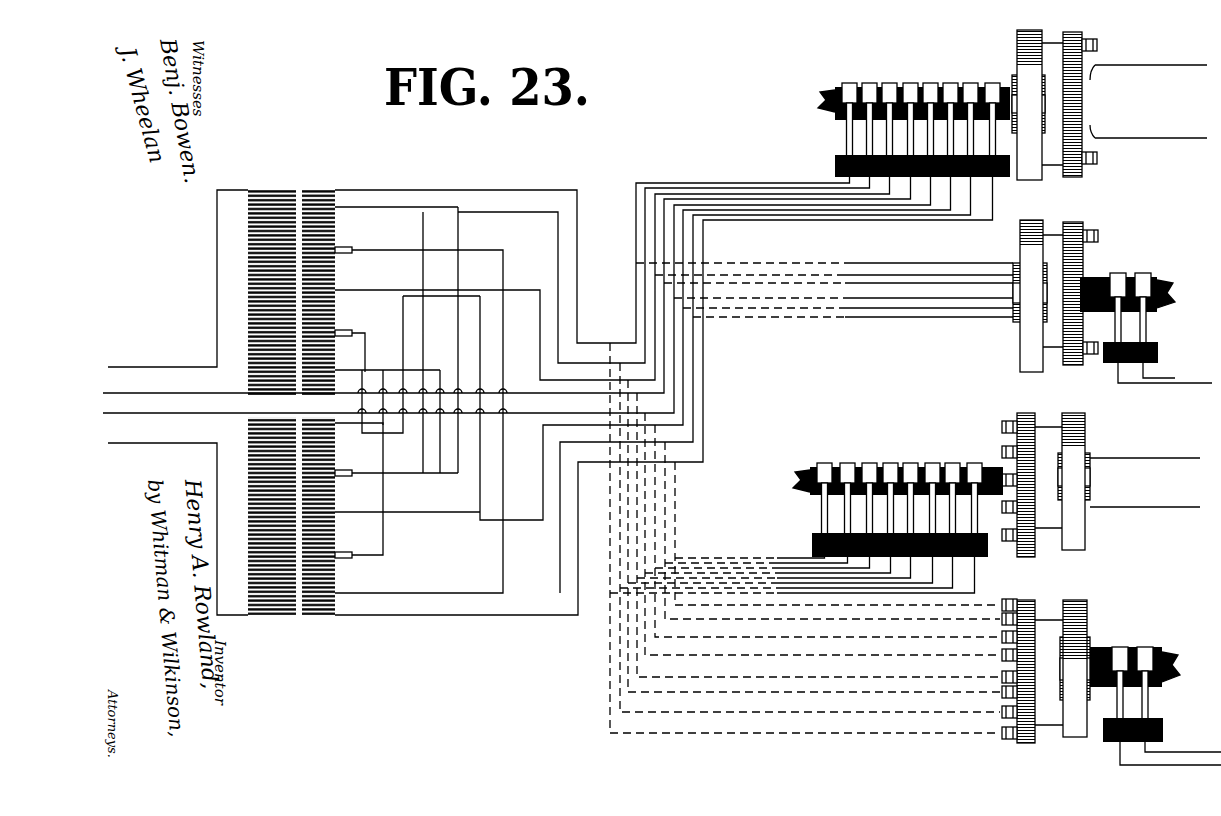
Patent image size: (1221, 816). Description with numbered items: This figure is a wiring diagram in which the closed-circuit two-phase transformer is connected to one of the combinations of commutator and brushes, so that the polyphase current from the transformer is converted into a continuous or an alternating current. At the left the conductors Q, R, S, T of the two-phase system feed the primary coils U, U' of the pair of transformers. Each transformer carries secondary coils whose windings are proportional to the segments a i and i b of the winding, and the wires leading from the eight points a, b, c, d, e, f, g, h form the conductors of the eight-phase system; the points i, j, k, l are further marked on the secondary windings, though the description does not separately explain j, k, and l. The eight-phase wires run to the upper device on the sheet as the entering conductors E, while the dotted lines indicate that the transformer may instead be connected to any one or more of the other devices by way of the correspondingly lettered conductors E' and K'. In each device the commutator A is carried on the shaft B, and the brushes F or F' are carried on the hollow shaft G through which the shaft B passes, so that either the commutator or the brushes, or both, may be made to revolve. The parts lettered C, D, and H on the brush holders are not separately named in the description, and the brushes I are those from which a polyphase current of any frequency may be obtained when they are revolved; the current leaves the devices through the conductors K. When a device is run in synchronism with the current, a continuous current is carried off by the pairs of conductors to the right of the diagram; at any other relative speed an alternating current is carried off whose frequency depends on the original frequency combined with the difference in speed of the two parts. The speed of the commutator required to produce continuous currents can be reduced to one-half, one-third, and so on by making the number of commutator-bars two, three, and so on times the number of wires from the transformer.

The primary coil U is at (278, 292).
The primary coil U' is at (277, 516).
The conductor of the two-phase system Q is at (165, 283).
The conductor of the two-phase system R is at (495, 291).
The conductor of the two-phase system S is at (505, 302).
The conductor of the two-phase system T is at (165, 523).
The secondary winding point a is at (591, 254).
The secondary winding point b is at (338, 250).
The secondary winding point c is at (342, 618).
The secondary winding point d is at (338, 291).
The secondary winding point e is at (351, 403).
The secondary winding point f is at (643, 367).
The secondary winding point g is at (333, 406).
The secondary winding point h is at (338, 333).
The secondary winding point i is at (340, 208).
The coil tap wire j is at (345, 617).
The coil tap wire k is at (366, 380).
The coil tap wire l is at (359, 424).
The commutator A is at (1015, 90).
The shaft B is at (820, 98).
The brushes C is at (950, 85).
The terminal bar D is at (880, 140).
The conductors E is at (998, 460).
The brush wires E' is at (918, 385).
The brushes F is at (1041, 387).
The brushes F' is at (1061, 397).
The shaft G is at (770, 476).
The brushes H is at (1143, 272).
The brushes I is at (1140, 330).
The conductors K is at (911, 538).
The brush wires K' is at (1042, 385).